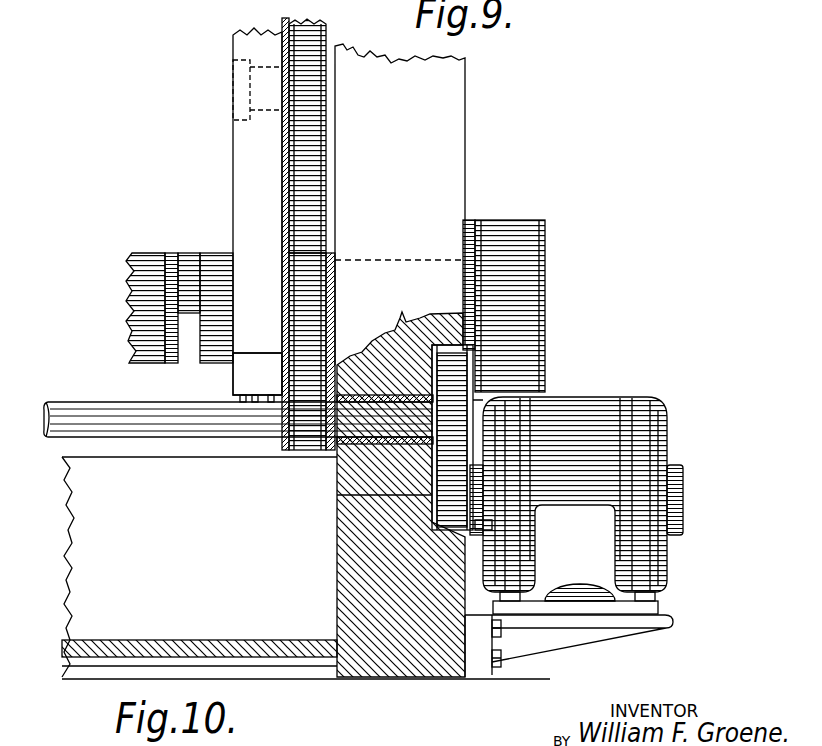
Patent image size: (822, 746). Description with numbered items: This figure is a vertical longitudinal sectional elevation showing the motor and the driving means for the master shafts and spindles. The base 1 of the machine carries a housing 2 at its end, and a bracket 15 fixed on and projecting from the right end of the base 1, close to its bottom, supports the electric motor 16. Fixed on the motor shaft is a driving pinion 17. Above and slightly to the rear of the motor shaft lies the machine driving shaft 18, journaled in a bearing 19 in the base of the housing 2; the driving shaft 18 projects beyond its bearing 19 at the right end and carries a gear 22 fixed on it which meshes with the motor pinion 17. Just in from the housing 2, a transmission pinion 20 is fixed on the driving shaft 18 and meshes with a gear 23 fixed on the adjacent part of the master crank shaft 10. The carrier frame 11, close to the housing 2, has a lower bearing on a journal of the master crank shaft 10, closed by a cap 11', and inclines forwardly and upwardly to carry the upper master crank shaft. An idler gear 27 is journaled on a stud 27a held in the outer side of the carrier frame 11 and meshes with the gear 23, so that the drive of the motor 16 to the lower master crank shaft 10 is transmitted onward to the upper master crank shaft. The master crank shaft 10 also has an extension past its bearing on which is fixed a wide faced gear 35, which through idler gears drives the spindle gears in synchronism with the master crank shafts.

The base 1 is at (337, 538).
The housing 2 is at (445, 168).
The master crank shaft 10 is at (150, 310).
The carrier frame 11 is at (223, 215).
The cap 11' is at (224, 378).
The bracket 15 is at (555, 638).
The electric motor 16 is at (645, 447).
The driving pinion 17 is at (337, 499).
The machine driving shaft 18 is at (128, 425).
The bearing 19 is at (337, 443).
The transmission pinion 20 is at (290, 442).
The gear 22 is at (478, 403).
The gear 23 is at (310, 308).
The idler gear 27 is at (327, 148).
The stud 27a is at (233, 93).
The wide faced gear 35 is at (523, 302).